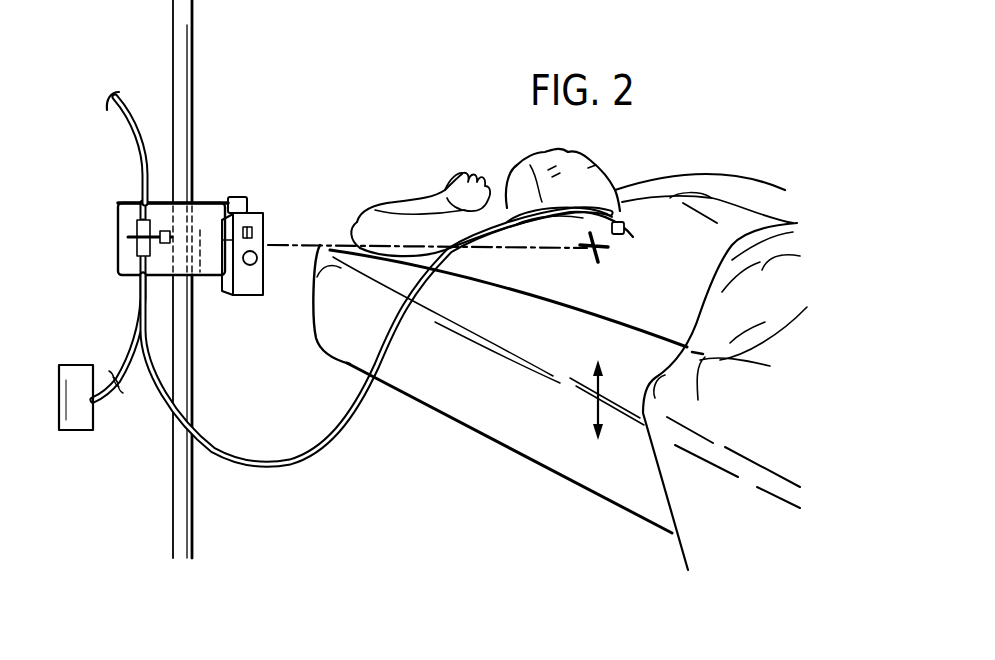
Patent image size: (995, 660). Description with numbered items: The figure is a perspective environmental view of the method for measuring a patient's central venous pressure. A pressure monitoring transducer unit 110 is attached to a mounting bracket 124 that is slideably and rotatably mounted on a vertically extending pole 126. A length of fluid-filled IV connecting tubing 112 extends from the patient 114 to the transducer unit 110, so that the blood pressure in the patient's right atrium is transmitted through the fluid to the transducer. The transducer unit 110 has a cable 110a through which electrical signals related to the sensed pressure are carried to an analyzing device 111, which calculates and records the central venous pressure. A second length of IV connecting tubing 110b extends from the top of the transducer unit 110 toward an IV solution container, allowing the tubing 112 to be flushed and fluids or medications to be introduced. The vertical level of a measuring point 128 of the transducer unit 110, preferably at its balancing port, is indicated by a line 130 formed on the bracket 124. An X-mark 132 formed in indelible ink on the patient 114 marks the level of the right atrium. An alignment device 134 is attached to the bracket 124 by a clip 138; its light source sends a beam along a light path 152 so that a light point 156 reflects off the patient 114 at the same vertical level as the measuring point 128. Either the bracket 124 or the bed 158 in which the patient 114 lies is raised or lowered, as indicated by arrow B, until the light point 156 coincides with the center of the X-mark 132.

The transducer unit 110 is at (113, 212).
The cable 110a is at (130, 360).
The second length of IV connecting tubing 110b is at (139, 157).
The analyzing device 111 is at (77, 373).
The IV connecting tubing 112 is at (278, 465).
The patient 114 is at (698, 228).
The mounting bracket 124 is at (117, 218).
The pole 126 is at (180, 72).
The measuring point 128 is at (120, 252).
The line 130 is at (210, 202).
The X-mark 132 is at (620, 233).
The alignment device 134 is at (267, 221).
The clip 138 is at (241, 201).
The light path 152 is at (348, 252).
The light point 156 is at (598, 262).
The bed 158 is at (473, 413).
The arrow B is at (590, 392).